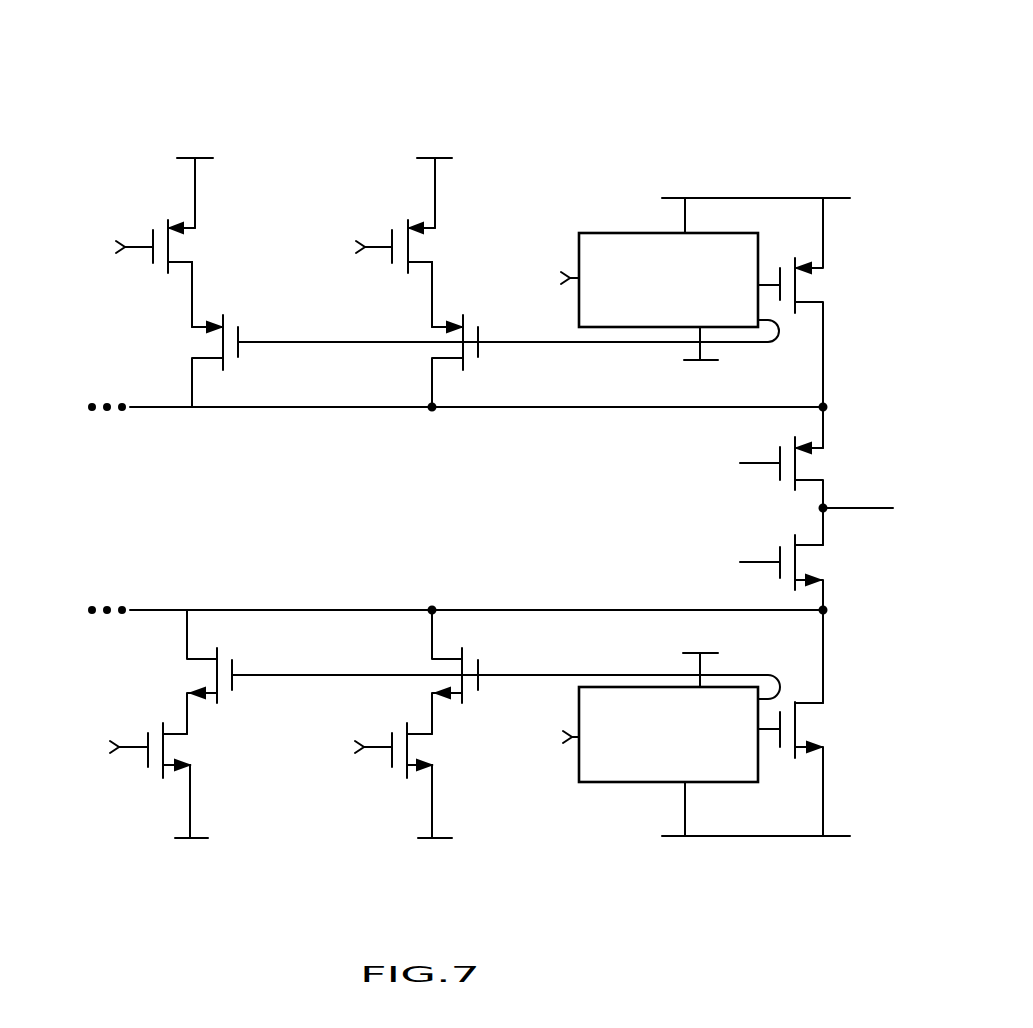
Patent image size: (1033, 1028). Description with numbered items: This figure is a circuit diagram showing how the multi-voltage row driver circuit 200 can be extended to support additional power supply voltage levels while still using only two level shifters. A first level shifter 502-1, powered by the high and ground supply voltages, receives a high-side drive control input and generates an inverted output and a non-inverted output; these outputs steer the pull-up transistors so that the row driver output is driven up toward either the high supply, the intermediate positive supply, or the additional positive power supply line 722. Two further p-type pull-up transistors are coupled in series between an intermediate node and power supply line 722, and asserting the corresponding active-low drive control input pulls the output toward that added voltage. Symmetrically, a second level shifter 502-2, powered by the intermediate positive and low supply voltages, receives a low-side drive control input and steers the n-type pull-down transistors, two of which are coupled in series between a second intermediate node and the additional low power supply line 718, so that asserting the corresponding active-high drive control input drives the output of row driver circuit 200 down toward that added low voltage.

The row driver circuit 200 is at (778, 80).
The power supply line 722 is at (204, 160).
The power supply line 718 is at (205, 838).
The first level shifter 502-1 is at (622, 232).
The second level shifter 502-2 is at (622, 782).